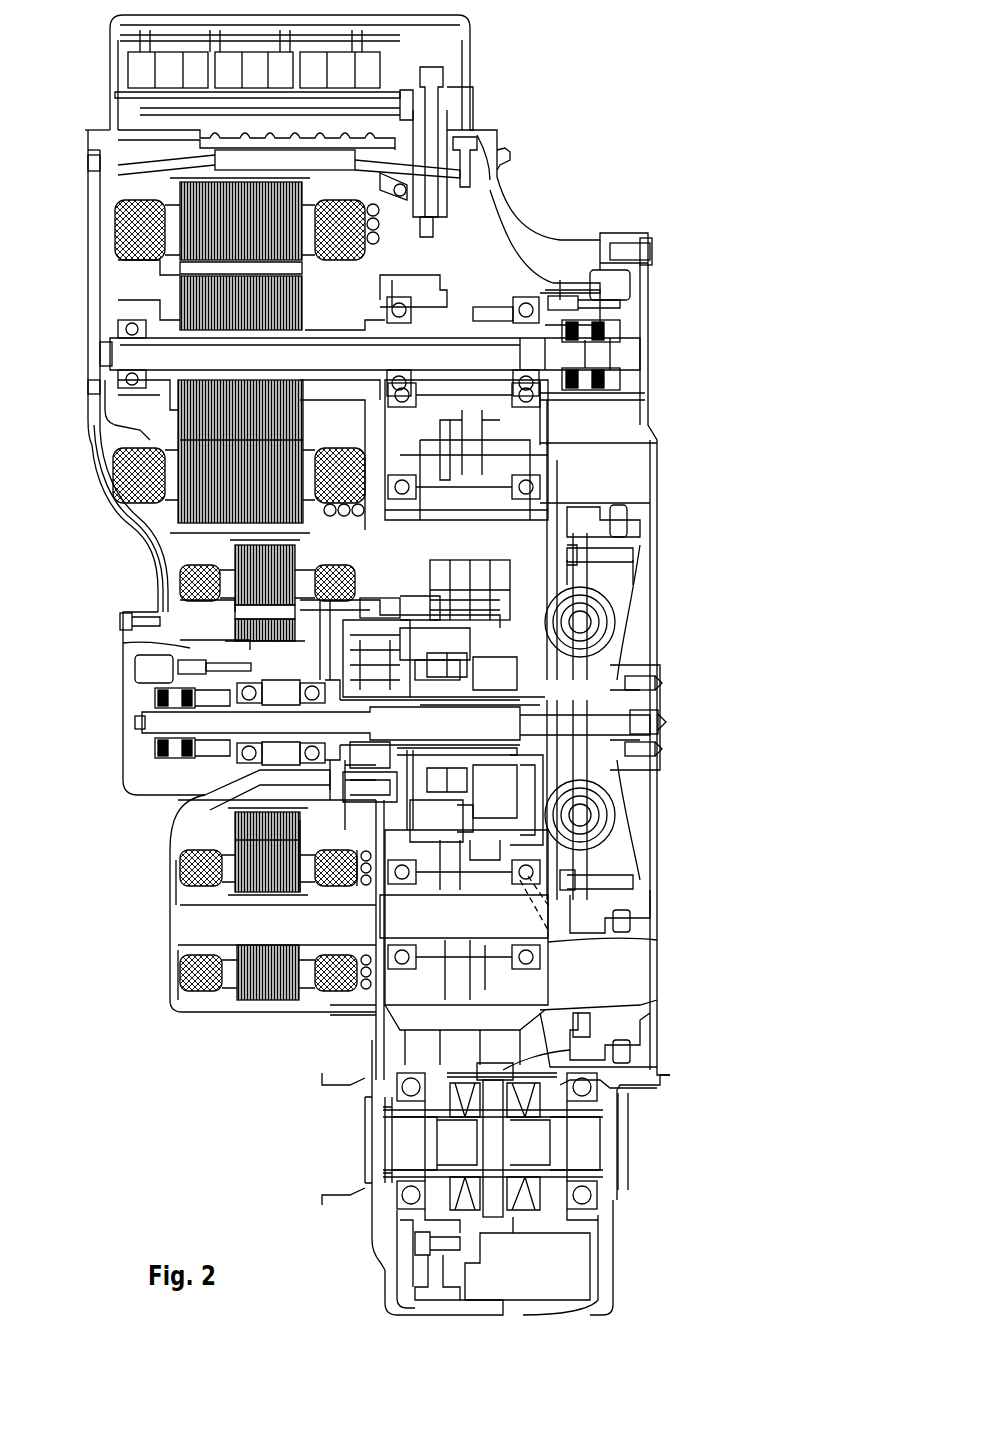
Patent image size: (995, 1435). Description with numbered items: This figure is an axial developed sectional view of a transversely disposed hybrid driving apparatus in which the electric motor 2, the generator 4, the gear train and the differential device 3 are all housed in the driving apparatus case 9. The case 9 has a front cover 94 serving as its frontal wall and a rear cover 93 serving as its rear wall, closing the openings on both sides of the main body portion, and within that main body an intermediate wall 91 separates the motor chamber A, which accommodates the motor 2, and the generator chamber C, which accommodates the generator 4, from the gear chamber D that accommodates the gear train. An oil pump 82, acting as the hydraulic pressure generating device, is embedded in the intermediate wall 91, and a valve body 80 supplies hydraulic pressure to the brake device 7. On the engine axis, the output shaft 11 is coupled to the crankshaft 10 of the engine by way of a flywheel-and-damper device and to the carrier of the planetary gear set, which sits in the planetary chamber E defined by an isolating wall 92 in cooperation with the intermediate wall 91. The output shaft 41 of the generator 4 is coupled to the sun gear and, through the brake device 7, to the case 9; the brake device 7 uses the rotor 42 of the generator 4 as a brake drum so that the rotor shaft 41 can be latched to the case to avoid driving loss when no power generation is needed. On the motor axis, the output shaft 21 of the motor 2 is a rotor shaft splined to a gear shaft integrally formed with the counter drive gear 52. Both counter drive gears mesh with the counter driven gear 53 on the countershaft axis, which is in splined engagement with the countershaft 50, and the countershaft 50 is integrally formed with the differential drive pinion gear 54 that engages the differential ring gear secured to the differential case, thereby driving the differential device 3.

The electric motor 2 is at (120, 300).
The differential device 3 is at (378, 1141).
The generator 4 is at (210, 815).
The brake device 7 is at (300, 885).
The driving apparatus case 9 is at (492, 170).
The crankshaft 10 is at (668, 690).
The output shaft 11 is at (665, 716).
The output shaft of the motor 21 is at (365, 335).
The output shaft of the generator 41 is at (150, 714).
The rotor 42 is at (240, 656).
The countershaft 50 is at (545, 940).
The counter drive gear 52 is at (488, 312).
The counter driven gear 53 is at (535, 1012).
The differential drive pinion gear 54 is at (410, 1012).
The valve body 80 is at (550, 598).
The oil pump 82 is at (478, 578).
The intermediate wall 91 is at (410, 600).
The isolating wall 92 is at (320, 890).
The rear cover 93 is at (152, 548).
The front cover 94 is at (600, 238).
The motor chamber A is at (357, 426).
The generator chamber C is at (222, 893).
The gear chamber D is at (448, 429).
The planetary chamber E is at (372, 605).